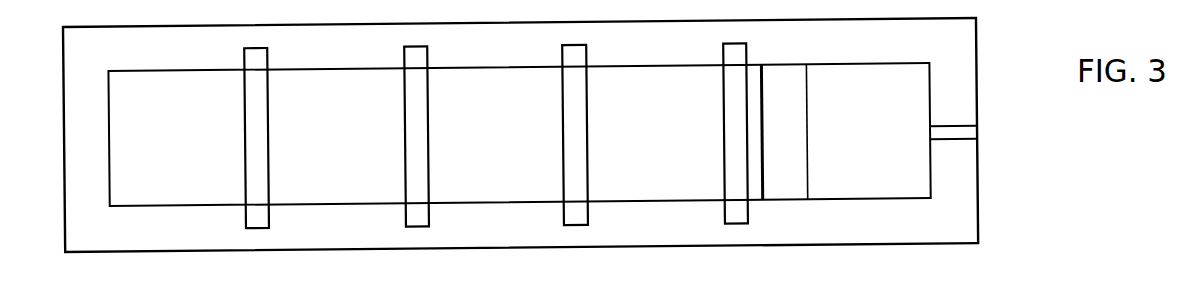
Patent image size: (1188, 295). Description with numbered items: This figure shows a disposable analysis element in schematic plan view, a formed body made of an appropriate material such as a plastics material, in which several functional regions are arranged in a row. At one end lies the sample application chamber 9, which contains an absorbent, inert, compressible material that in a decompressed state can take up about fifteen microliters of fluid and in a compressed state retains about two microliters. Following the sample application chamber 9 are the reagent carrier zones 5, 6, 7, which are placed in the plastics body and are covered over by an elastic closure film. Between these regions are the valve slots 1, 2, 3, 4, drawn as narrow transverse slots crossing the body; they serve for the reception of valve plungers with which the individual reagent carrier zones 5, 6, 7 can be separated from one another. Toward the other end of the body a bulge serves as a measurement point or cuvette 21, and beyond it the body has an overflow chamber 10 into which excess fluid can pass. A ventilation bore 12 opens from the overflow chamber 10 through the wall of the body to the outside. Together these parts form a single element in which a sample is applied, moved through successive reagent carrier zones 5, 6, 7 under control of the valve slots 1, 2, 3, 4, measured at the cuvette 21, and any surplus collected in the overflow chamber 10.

The valve slot 1 is at (256, 220).
The valve slot 2 is at (416, 220).
The valve slot 3 is at (573, 220).
The valve slot 4 is at (733, 215).
The reagent carrier zone 5 is at (341, 188).
The reagent carrier zone 6 is at (496, 186).
The reagent carrier zone 7 is at (656, 184).
The sample application chamber 9 is at (161, 196).
The overflow chamber 10 is at (880, 191).
The ventilation bore 12 is at (967, 142).
The cuvette 21 is at (794, 177).